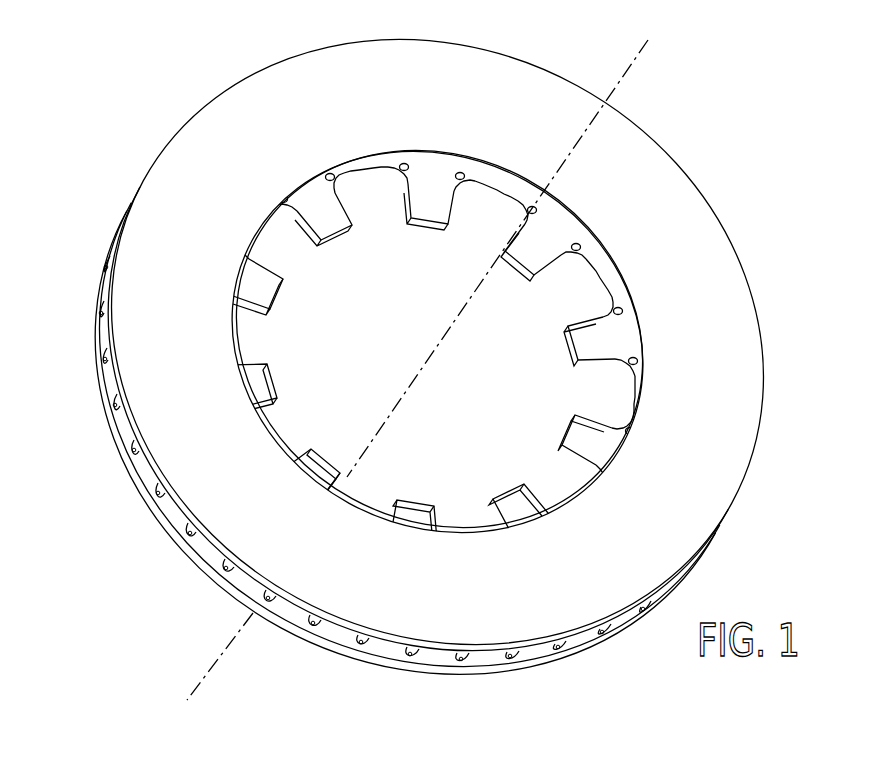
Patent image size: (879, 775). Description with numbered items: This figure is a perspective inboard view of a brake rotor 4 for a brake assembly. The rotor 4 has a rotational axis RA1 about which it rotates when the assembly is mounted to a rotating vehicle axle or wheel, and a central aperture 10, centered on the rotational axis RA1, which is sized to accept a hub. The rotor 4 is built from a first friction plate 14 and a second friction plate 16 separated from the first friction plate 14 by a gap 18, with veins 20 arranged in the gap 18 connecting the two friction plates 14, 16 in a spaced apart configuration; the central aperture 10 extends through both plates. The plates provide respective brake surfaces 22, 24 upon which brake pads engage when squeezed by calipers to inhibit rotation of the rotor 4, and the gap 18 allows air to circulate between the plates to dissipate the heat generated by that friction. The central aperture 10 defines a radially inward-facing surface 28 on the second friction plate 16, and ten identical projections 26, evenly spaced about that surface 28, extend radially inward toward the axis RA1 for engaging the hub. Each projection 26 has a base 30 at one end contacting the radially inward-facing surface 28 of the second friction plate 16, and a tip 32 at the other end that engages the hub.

The brake rotor 4 is at (160, 108).
The central aperture 10 is at (381, 293).
The first friction plate 14 is at (152, 463).
The second friction plate 16 is at (162, 523).
The gap 18 is at (436, 172).
The veins 20 is at (461, 170).
The brake surface 22 is at (722, 436).
The brake surface 24 is at (101, 401).
The projections 26 is at (262, 288).
The radially inward-facing surface 28 is at (366, 182).
The base 30 is at (618, 338).
The tip 32 is at (585, 345).
The rotational axis RA1 is at (424, 379).